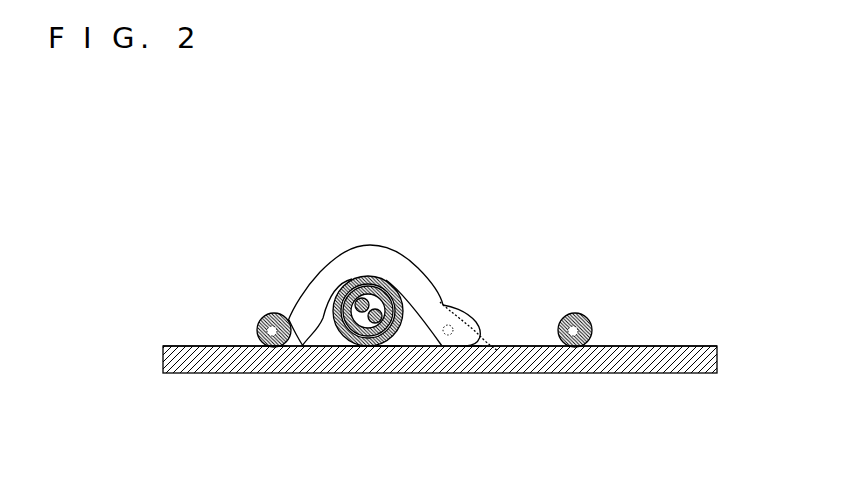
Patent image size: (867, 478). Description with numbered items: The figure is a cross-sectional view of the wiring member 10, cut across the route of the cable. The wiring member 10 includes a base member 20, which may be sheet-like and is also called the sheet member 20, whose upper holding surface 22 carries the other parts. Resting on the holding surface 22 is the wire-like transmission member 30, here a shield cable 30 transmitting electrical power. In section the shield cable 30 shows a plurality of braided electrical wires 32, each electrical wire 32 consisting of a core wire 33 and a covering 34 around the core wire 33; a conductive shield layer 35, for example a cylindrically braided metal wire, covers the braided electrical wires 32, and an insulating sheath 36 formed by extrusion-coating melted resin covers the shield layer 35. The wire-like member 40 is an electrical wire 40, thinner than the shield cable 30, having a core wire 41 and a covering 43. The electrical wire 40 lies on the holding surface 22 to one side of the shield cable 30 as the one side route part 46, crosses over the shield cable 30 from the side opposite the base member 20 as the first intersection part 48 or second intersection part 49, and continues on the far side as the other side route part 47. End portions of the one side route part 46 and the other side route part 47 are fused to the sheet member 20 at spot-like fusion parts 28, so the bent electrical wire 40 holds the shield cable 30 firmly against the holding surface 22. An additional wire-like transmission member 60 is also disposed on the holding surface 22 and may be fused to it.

The wiring member 10 is at (392, 296).
The base member 20 is at (468, 360).
The holding surface 22 is at (440, 318).
The fusion part 28 is at (368, 394).
The wire-like transmission member 30 is at (380, 394).
The electrical wire 32 is at (355, 248).
The core wire 33 is at (330, 266).
The covering 34 is at (354, 271).
The shield layer 35 is at (372, 271).
The sheath 36 is at (459, 299).
The wire-like member 40 is at (242, 303).
The core wire 41 is at (241, 307).
The covering 43 is at (242, 329).
The one side route part 46 is at (313, 381).
The other side route part 47 is at (480, 372).
The first intersection part 48 is at (398, 247).
The second intersection part 49 is at (365, 283).
The wire-like transmission member 60 is at (573, 302).